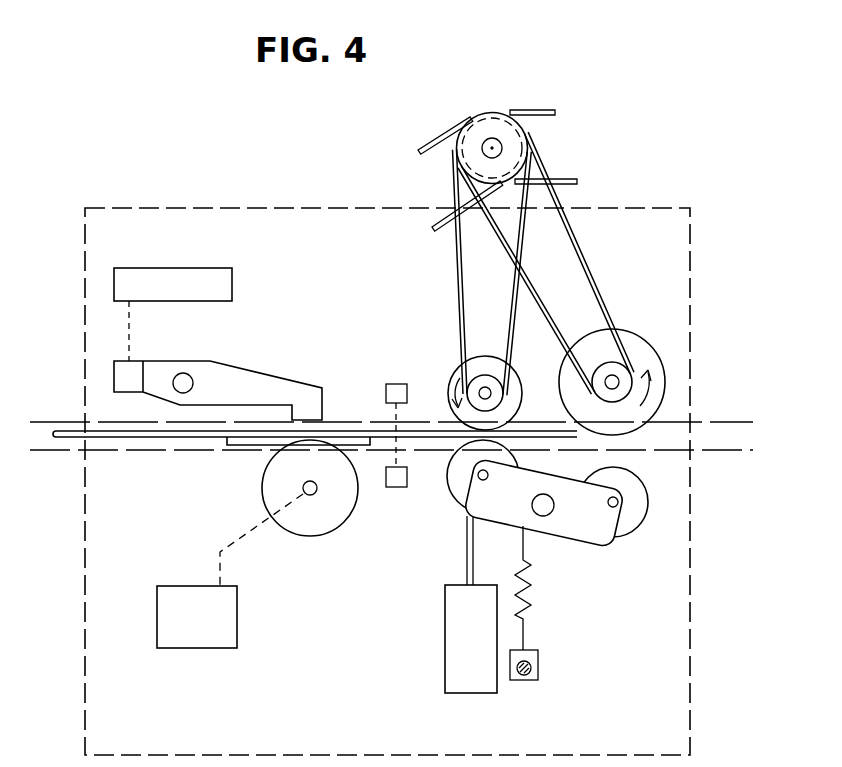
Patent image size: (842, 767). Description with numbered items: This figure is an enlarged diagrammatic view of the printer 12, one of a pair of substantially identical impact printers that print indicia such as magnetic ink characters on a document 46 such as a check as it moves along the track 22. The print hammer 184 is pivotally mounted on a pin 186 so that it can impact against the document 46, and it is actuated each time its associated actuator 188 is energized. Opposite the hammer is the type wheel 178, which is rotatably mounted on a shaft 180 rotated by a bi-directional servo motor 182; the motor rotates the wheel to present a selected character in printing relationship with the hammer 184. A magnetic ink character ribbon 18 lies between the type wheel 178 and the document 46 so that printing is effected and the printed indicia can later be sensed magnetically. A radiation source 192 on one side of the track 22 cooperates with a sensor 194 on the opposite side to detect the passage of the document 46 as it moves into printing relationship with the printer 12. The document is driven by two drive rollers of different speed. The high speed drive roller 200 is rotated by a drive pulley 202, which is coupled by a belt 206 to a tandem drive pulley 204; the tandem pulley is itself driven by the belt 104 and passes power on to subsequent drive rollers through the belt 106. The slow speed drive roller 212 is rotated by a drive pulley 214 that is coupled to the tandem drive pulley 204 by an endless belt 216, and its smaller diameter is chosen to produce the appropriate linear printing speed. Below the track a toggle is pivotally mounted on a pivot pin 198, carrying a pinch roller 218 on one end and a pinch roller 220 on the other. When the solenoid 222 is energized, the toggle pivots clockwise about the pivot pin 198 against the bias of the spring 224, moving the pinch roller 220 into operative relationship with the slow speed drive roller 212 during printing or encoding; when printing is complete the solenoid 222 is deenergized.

The printer 12 is at (278, 203).
The track 22 is at (712, 460).
The document 46 is at (53, 433).
The ribbon 18 is at (240, 444).
The actuator 188 is at (172, 268).
The print hammer 184 is at (218, 369).
The pin 186 is at (185, 372).
The type wheel 178 is at (279, 511).
The shaft 180 is at (303, 490).
The servo motor 182 is at (207, 648).
The radiation source 192 is at (390, 384).
The sensor 194 is at (397, 487).
The tandem drive pulley 204 is at (474, 125).
The belt 104 is at (422, 143).
The belt 106 is at (543, 108).
The endless belt 216 is at (460, 270).
The belt 206 is at (583, 256).
The drive roller 212 is at (459, 369).
The drive pulley 214 is at (473, 388).
The drive roller 200 is at (647, 363).
The drive pulley 202 is at (625, 373).
The pinch roller 220 is at (539, 509).
The pivot pin 198 is at (548, 512).
The pinch roller 218 is at (633, 528).
The solenoid 222 is at (448, 660).
The spring 224 is at (530, 597).